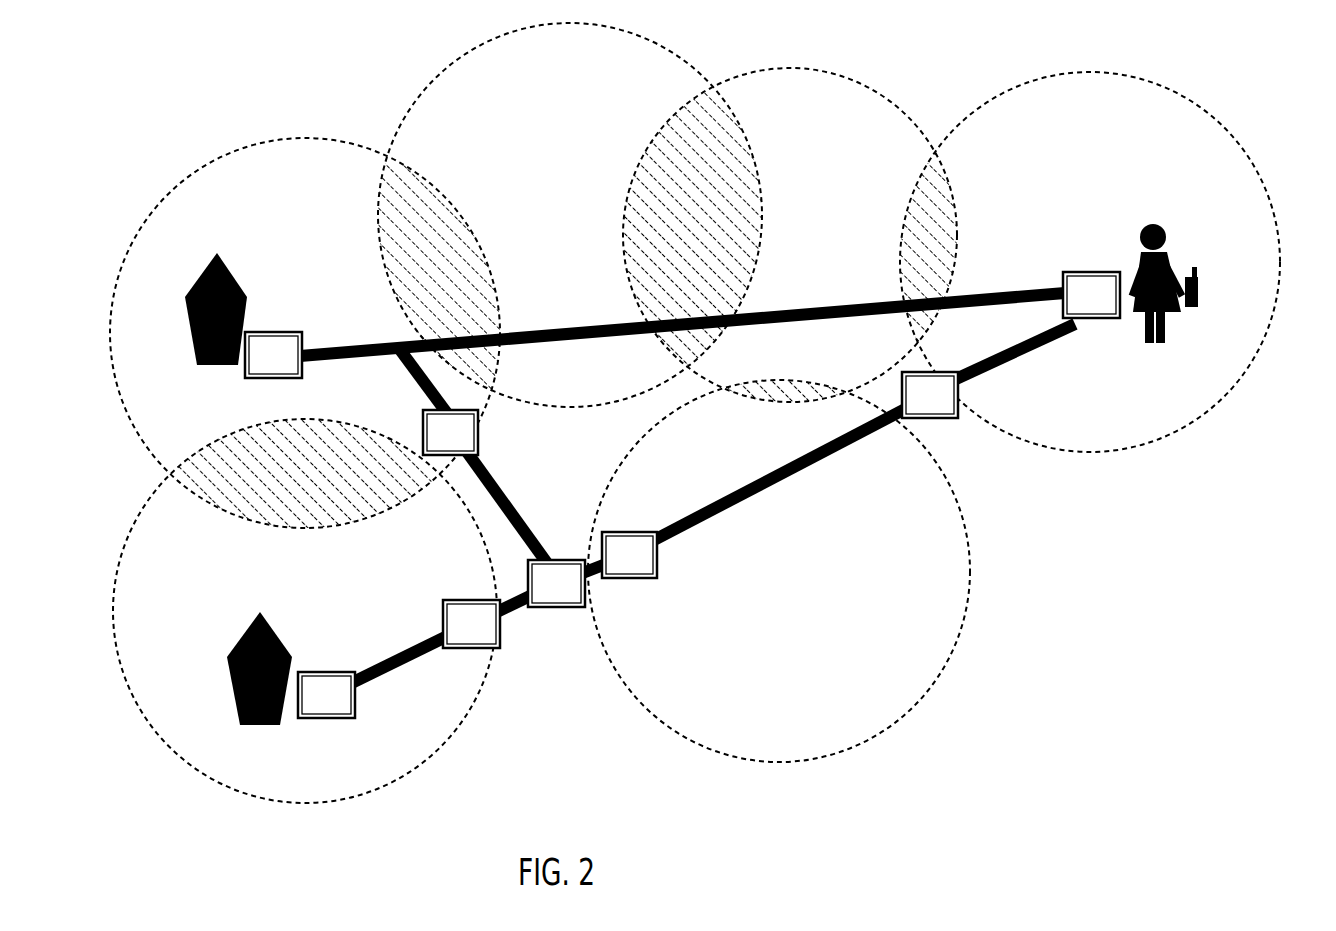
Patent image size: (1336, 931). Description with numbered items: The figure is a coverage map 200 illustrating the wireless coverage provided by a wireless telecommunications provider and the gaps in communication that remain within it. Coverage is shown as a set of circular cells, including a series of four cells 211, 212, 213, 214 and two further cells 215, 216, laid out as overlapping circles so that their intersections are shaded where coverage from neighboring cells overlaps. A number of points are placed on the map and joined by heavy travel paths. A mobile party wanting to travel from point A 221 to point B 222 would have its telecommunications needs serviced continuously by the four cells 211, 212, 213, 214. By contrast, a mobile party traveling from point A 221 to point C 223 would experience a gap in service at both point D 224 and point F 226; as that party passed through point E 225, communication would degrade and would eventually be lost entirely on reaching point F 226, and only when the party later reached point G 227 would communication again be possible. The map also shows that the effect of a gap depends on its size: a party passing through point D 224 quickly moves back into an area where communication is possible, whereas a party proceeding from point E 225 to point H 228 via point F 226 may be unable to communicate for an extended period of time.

The coverage map 200 is at (251, 66).
The cell 211 is at (1143, 76).
The cell 212 is at (850, 78).
The cell 213 is at (442, 68).
The cell 214 is at (188, 176).
The coverage area of node E 215 is at (935, 685).
The coverage area of node C 216 is at (143, 512).
The point A 221 is at (1097, 272).
The point B 222 is at (268, 332).
The point C 223 is at (325, 718).
The point D 224 is at (945, 418).
The point E 225 is at (633, 578).
The point F 226 is at (558, 560).
The point G 227 is at (500, 626).
The point H 228 is at (478, 432).